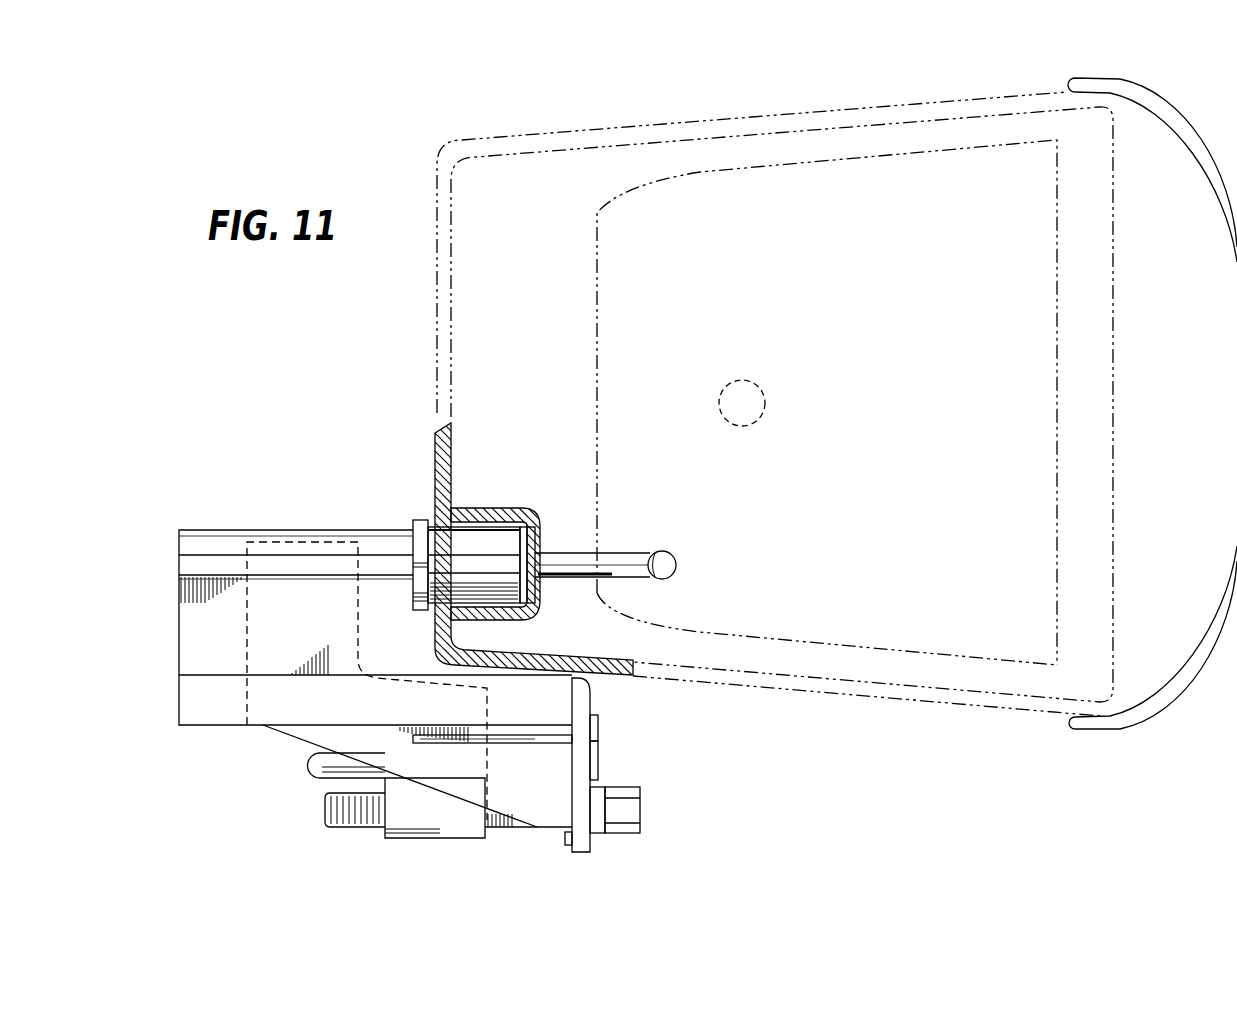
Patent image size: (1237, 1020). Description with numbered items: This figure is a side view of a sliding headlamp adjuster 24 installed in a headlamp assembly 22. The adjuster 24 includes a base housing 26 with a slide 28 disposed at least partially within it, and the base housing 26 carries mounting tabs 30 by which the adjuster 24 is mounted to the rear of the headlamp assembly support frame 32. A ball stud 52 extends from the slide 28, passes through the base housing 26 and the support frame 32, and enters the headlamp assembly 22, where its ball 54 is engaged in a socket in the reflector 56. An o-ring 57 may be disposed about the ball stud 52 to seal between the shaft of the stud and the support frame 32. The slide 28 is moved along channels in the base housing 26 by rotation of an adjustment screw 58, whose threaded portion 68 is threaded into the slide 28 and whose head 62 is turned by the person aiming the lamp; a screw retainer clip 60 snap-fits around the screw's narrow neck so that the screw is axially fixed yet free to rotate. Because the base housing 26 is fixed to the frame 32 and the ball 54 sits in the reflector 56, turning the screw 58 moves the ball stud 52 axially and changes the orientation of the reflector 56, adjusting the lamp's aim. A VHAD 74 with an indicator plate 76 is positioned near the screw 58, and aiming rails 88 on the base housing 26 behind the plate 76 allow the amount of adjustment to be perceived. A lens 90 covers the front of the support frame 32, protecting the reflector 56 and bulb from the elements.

The headlamp assembly 22 is at (686, 120).
The sliding headlamp adjuster 24 is at (286, 531).
The base housing 26 is at (221, 565).
The slide 28 is at (415, 824).
The mounting tabs 30 is at (424, 520).
The headlamp assembly support frame 32 is at (448, 153).
The ball stud 52 is at (626, 578).
The ball 54 is at (676, 578).
The reflector 56 is at (851, 648).
The o-ring 57 is at (536, 602).
The adjustment screw 58 is at (643, 826).
The screw retainer clip 60 is at (575, 841).
The head 62 is at (622, 809).
The threaded portion 68 is at (323, 810).
The VHAD 74 is at (603, 773).
The indicator plate 76 is at (600, 752).
The aiming rails 88 is at (530, 740).
The lens 90 is at (1173, 128).